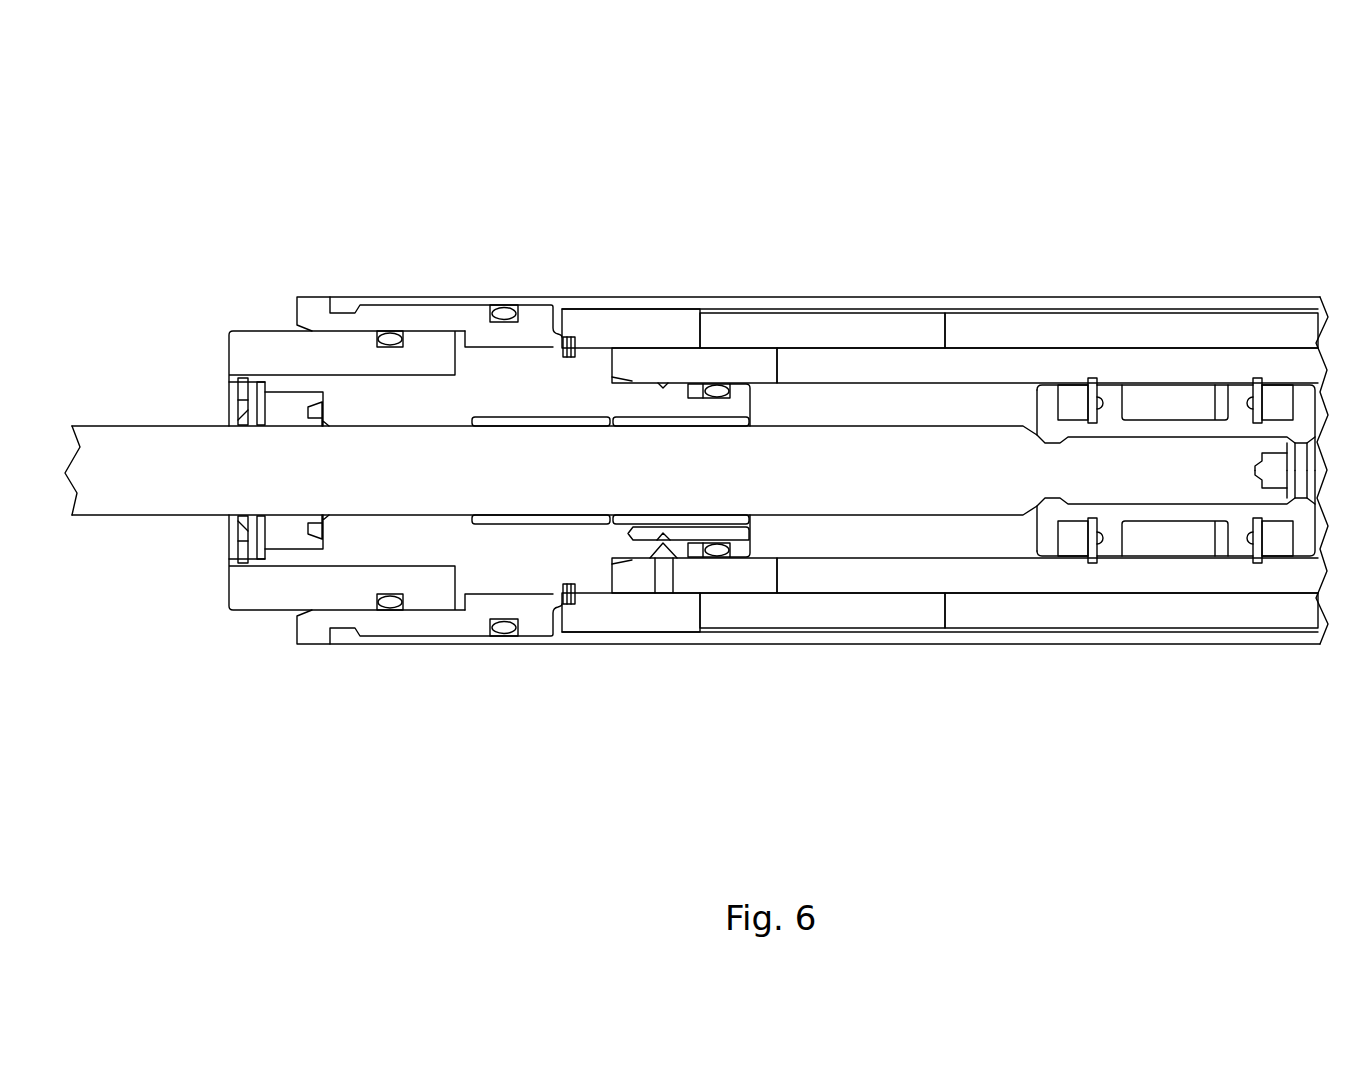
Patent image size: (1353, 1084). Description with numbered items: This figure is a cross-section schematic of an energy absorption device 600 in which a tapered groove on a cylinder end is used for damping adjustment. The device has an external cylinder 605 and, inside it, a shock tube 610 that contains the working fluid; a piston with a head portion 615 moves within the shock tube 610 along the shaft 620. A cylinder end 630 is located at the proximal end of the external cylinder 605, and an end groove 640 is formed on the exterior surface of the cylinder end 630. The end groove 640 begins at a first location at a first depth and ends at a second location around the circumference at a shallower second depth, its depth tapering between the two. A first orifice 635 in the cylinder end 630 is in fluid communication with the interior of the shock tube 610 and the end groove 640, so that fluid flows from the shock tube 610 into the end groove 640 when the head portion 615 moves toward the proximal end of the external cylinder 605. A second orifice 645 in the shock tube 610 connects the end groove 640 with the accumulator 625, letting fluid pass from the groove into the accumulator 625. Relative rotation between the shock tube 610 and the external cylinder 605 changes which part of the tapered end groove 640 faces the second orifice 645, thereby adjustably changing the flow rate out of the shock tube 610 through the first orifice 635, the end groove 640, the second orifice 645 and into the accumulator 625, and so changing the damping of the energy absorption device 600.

The energy absorption device 600 is at (1062, 147).
The external cylinder 605 is at (431, 657).
The shock tube 610 is at (664, 360).
The head portion of the piston 615 is at (1112, 381).
The shaft 620 is at (169, 451).
The accumulator 625 is at (594, 624).
The cylinder end 630 is at (428, 398).
The first orifice 635 is at (767, 538).
The end groove 640 is at (688, 568).
The second orifice 645 is at (663, 595).